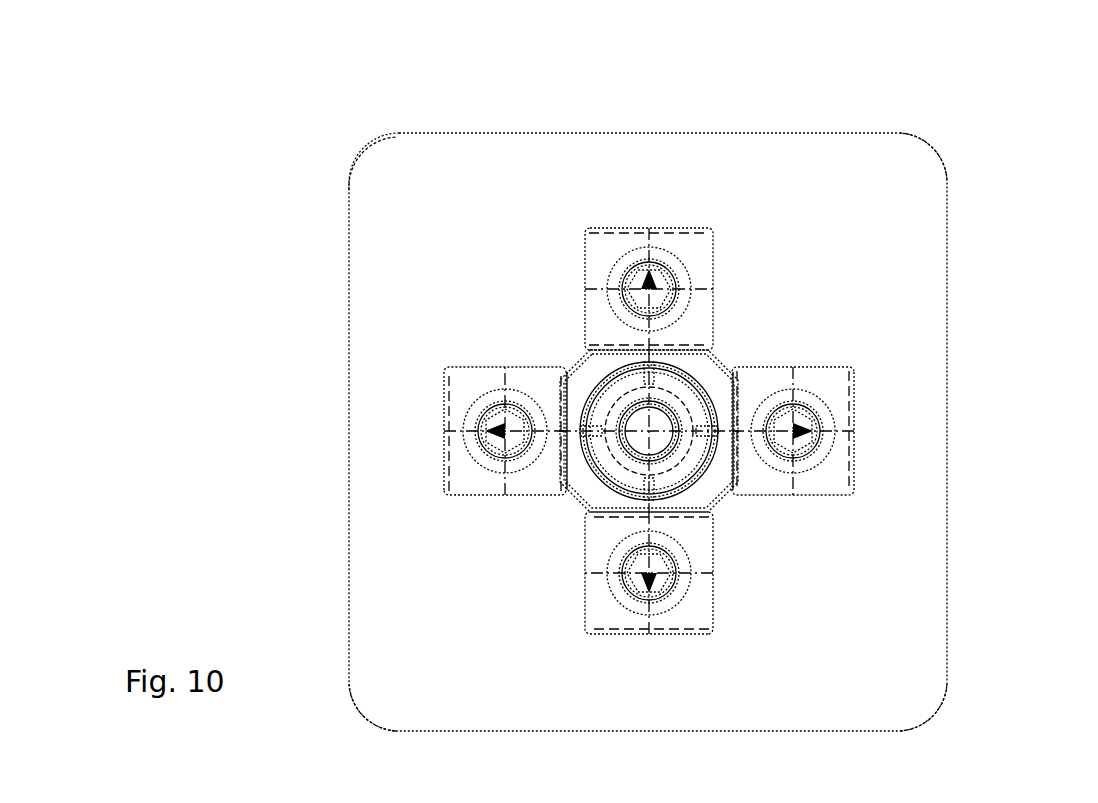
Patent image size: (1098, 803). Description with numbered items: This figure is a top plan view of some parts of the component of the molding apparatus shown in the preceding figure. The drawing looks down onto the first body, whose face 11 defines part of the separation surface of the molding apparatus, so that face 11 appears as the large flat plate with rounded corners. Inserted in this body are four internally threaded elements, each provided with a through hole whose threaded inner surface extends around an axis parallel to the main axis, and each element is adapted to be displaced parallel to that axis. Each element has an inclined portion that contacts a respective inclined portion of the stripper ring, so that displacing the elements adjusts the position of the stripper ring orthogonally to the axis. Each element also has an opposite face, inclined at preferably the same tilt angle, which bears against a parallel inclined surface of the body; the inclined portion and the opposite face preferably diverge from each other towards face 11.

The face 11 is at (824, 242).